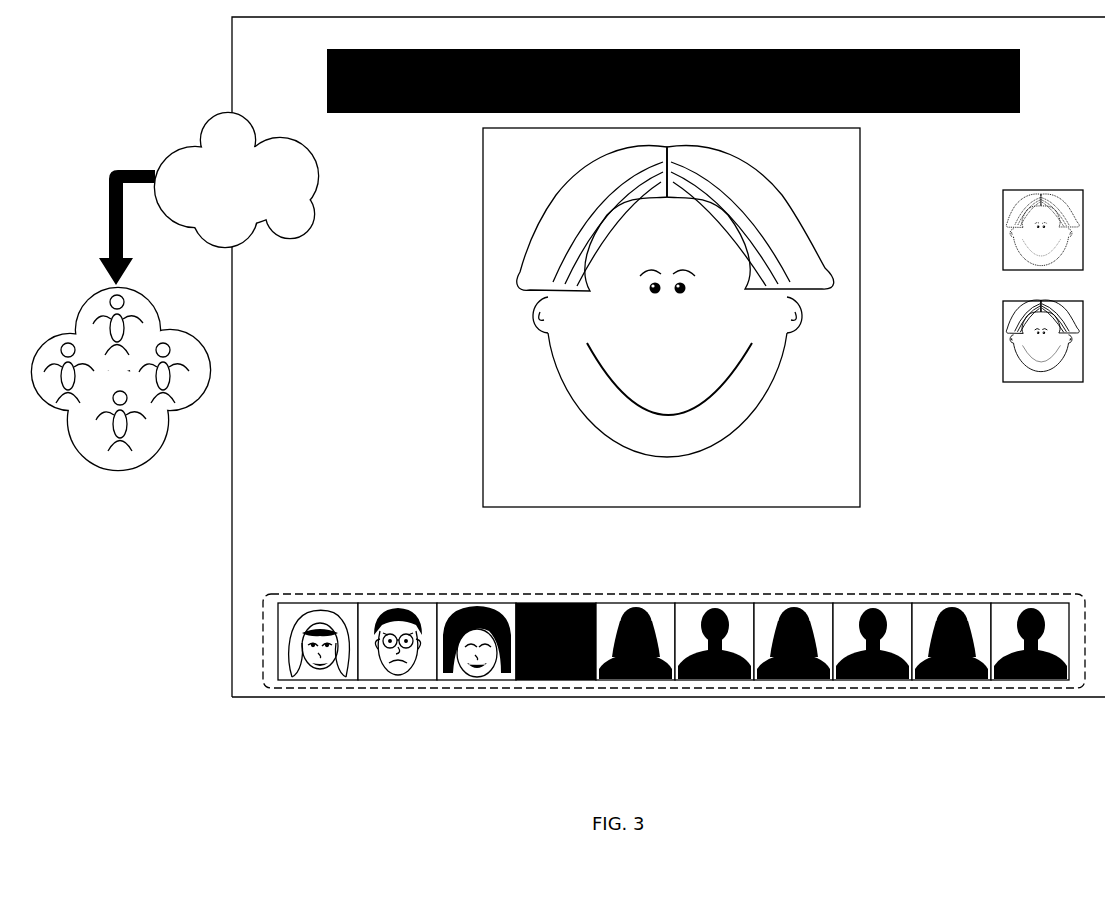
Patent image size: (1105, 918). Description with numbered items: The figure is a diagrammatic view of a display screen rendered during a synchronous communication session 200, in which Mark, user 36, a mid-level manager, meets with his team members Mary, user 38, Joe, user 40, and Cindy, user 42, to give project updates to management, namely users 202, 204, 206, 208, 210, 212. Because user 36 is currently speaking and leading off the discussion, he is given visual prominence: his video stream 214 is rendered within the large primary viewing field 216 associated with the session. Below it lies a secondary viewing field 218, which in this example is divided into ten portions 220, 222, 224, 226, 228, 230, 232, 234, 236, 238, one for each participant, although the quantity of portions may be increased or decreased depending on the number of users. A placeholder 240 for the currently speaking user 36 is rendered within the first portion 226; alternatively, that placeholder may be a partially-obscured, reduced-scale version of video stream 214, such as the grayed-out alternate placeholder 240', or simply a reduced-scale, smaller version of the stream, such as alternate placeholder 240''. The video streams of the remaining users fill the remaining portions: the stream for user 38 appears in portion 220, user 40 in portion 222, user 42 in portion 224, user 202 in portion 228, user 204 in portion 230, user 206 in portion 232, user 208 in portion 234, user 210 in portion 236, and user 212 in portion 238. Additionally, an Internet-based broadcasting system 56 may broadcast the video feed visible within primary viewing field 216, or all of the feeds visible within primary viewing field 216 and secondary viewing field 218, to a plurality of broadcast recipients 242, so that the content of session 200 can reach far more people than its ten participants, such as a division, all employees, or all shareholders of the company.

The user 36 is at (671, 482).
The user 38 is at (325, 680).
The user 40 is at (400, 680).
The user 42 is at (477, 680).
The Internet-based broadcasting system 56 is at (208, 199).
The synchronous communication session 200 is at (673, 81).
The user 202 is at (630, 680).
The user 204 is at (705, 680).
The user 206 is at (785, 680).
The user 208 is at (868, 680).
The user 210 is at (940, 680).
The user 212 is at (1018, 680).
The video stream 214 is at (832, 452).
The primary viewing field 216 is at (483, 453).
The secondary viewing field 218 is at (263, 640).
The portion 220 is at (322, 641).
The portion 222 is at (398, 641).
The portion 224 is at (476, 641).
The portion 226 is at (560, 641).
The portion 228 is at (637, 641).
The portion 230 is at (714, 641).
The portion 232 is at (794, 641).
The portion 234 is at (873, 641).
The portion 236 is at (951, 641).
The portion 238 is at (1030, 641).
The placeholder 240 is at (560, 666).
The alternate placeholder 240' is at (1038, 206).
The alternate placeholder 240'' is at (1037, 364).
The plurality of broadcast recipients 242 is at (118, 472).